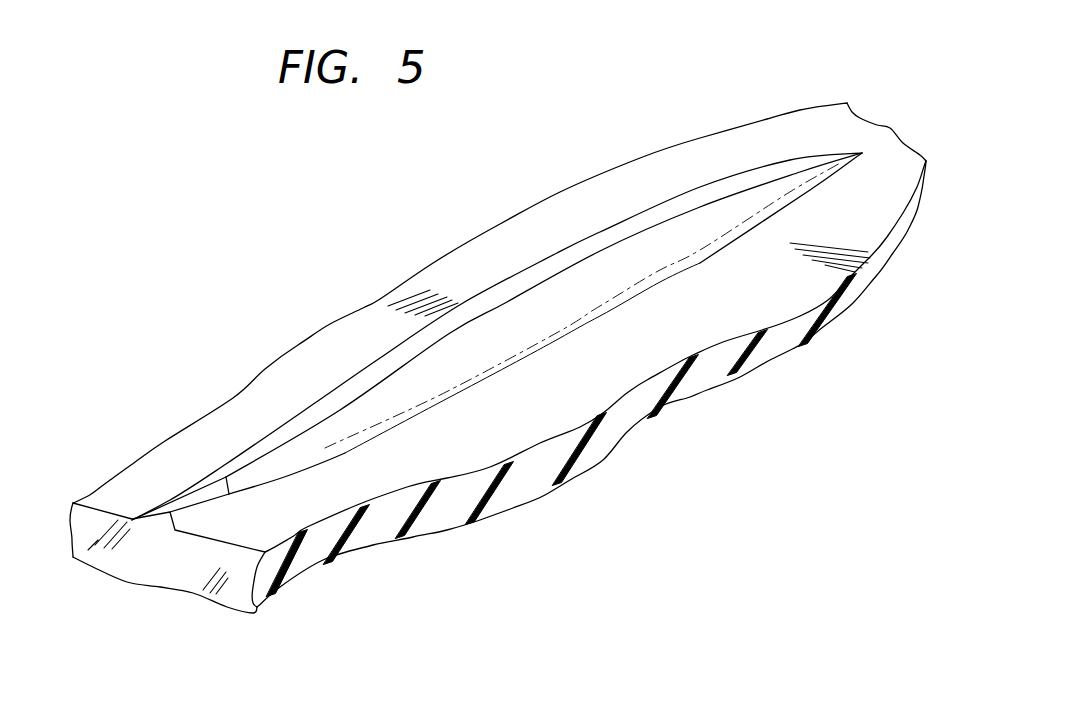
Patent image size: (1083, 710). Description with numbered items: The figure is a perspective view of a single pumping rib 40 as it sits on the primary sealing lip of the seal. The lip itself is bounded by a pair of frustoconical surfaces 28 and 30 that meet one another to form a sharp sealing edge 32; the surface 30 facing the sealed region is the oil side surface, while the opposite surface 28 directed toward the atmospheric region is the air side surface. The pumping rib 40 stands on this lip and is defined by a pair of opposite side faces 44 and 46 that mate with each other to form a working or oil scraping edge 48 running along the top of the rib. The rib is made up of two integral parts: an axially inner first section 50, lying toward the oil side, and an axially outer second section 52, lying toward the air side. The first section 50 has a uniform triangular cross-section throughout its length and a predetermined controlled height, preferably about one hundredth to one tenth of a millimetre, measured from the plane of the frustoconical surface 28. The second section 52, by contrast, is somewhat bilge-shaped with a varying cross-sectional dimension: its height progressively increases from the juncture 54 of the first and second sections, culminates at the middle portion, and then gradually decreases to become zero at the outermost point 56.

The frustoconical surface 28 is at (692, 163).
The frustoconical surface 30 is at (167, 573).
The sealing edge 32 is at (222, 544).
The pumping rib 40 is at (784, 135).
The side face 44 is at (557, 253).
The side face 46 is at (573, 293).
The oil scraping edge 48 is at (620, 243).
The first section 50 is at (191, 472).
The second section 52 is at (546, 392).
The juncture 54 is at (230, 484).
The outermost point 56 is at (862, 153).